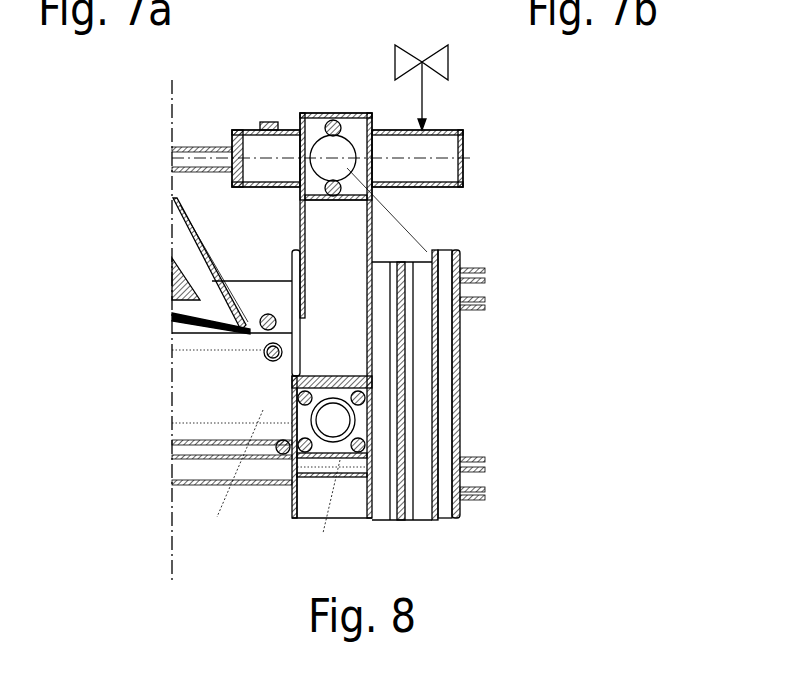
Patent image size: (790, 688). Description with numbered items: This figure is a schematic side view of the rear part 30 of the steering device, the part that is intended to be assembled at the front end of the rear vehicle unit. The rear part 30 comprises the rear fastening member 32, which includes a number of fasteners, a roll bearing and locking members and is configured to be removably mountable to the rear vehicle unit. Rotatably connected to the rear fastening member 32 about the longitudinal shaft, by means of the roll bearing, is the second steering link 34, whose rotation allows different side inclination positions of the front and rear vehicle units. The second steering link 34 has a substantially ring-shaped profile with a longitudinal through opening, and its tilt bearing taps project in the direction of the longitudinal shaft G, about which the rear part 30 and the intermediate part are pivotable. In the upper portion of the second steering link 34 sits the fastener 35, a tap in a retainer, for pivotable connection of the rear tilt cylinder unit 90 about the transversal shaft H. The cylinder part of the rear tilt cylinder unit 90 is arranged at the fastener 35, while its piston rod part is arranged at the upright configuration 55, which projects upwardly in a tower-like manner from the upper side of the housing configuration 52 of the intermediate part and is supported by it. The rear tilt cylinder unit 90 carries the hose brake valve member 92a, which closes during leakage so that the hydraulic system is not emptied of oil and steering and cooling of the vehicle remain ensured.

The rear part 30 is at (464, 97).
The rear fastening member 32 is at (429, 526).
The second steering link 34 is at (336, 526).
The fastener 35 is at (300, 125).
The housing configuration 52 is at (200, 410).
The upright configuration 55 is at (178, 238).
The rear tilt cylinder unit 90 is at (400, 128).
The hose brake valve member 92a is at (410, 50).
The longitudinal shaft G is at (333, 422).
The transversal shaft H is at (332, 160).